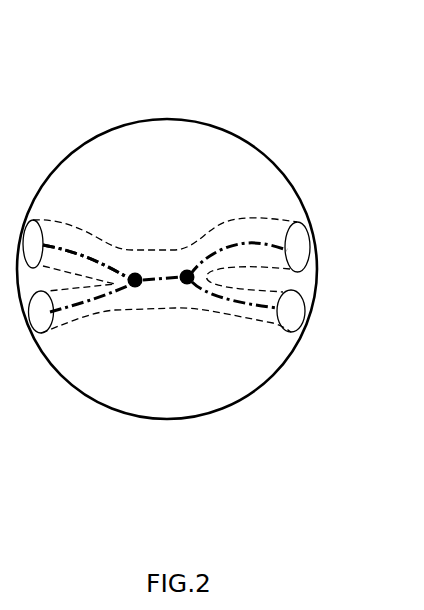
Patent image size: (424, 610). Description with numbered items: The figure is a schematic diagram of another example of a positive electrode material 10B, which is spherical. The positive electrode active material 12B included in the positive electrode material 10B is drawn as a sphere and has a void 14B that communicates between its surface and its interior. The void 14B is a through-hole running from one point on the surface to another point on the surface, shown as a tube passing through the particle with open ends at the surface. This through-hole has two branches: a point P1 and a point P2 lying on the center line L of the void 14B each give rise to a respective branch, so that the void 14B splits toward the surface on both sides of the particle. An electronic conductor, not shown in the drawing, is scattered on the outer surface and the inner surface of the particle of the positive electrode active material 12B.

The positive electrode material 10B is at (283, 84).
The positive electrode active material 12B is at (255, 366).
The void 14B is at (267, 225).
The center line L is at (78, 250).
The point P1 is at (133, 288).
The point P2 is at (190, 284).